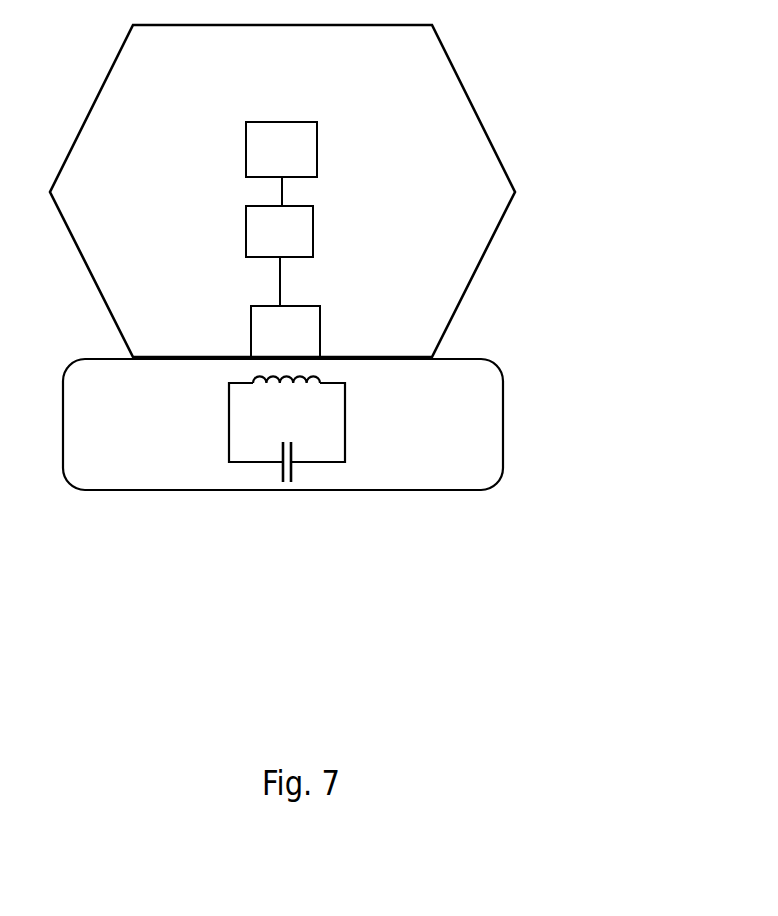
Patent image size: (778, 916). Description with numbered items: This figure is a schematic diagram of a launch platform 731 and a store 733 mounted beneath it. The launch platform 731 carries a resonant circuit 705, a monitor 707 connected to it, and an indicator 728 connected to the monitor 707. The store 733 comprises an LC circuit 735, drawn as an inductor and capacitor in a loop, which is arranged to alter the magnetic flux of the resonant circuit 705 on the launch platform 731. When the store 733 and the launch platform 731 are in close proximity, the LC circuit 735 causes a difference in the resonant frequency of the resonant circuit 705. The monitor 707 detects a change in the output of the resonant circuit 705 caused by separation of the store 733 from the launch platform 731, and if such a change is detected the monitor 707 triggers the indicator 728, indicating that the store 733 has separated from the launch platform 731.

The indicator 728 is at (311, 163).
The monitor 707 is at (310, 247).
The resonant circuit 705 is at (315, 349).
The launch platform 731 is at (483, 257).
The store 733 is at (459, 428).
The LC circuit 735 is at (335, 463).